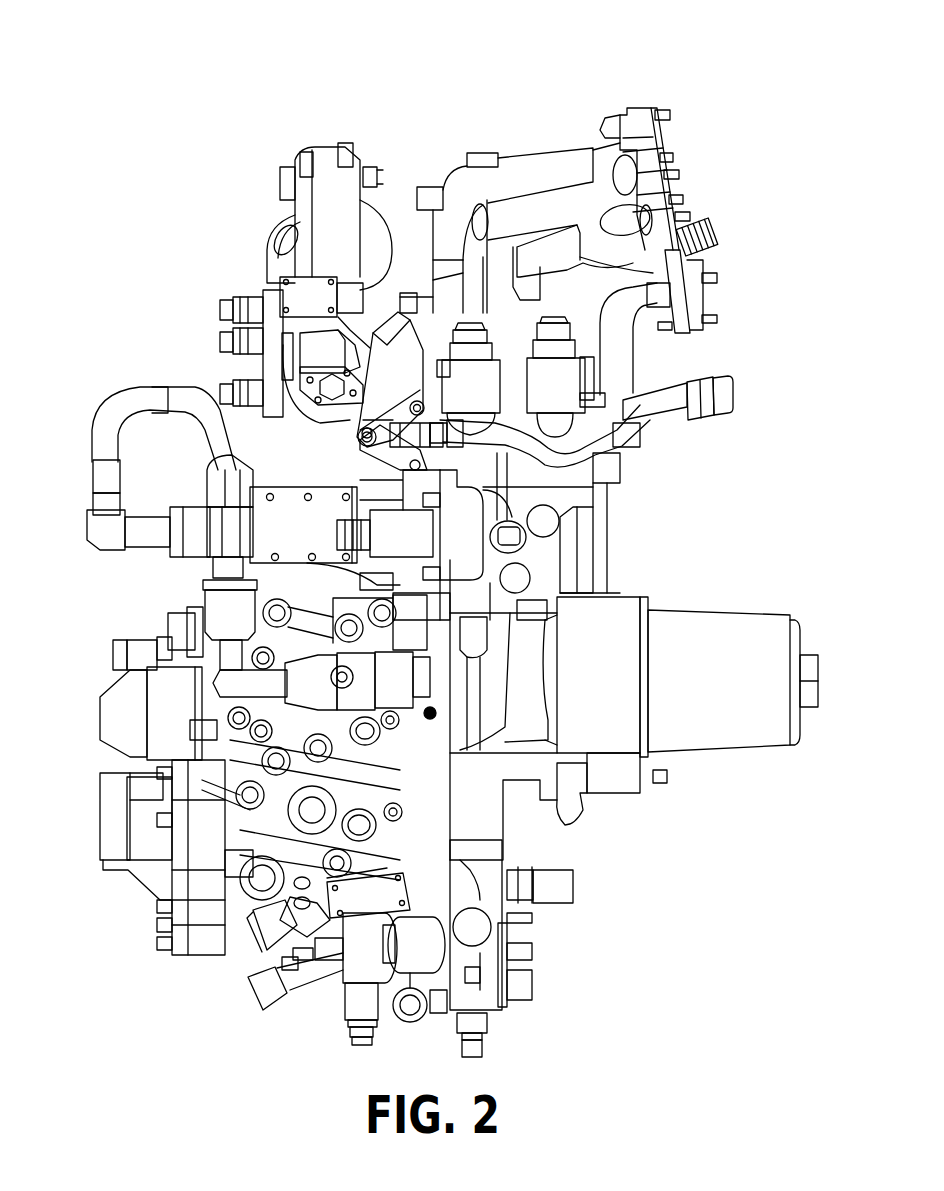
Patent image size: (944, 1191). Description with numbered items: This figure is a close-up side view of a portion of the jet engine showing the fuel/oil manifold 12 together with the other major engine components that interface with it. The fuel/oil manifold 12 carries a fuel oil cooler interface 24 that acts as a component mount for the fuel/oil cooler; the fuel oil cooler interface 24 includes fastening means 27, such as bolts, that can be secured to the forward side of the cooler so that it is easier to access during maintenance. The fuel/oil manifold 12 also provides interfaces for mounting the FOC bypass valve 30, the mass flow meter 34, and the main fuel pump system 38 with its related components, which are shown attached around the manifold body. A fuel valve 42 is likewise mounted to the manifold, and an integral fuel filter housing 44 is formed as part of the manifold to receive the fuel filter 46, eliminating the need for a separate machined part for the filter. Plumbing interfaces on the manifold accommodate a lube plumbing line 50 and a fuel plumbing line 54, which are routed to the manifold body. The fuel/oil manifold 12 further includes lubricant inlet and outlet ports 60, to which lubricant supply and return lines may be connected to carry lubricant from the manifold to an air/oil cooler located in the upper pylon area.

The fuel/oil manifold 12 is at (553, 835).
The fuel oil cooler interface 24 is at (775, 97).
The fastening means 27 is at (682, 175).
The FOC bypass valve 30 is at (293, 210).
The mass flow meter 34 is at (333, 487).
The main fuel pump system 38 is at (130, 870).
The fuel valve 42 is at (550, 580).
The integral fuel filter housing 44 is at (640, 583).
The fuel filter 46 is at (755, 607).
The lube plumbing line 50 is at (645, 418).
The fuel plumbing line 54 is at (637, 363).
The lubricant inlet and outlet ports 60 is at (560, 320).